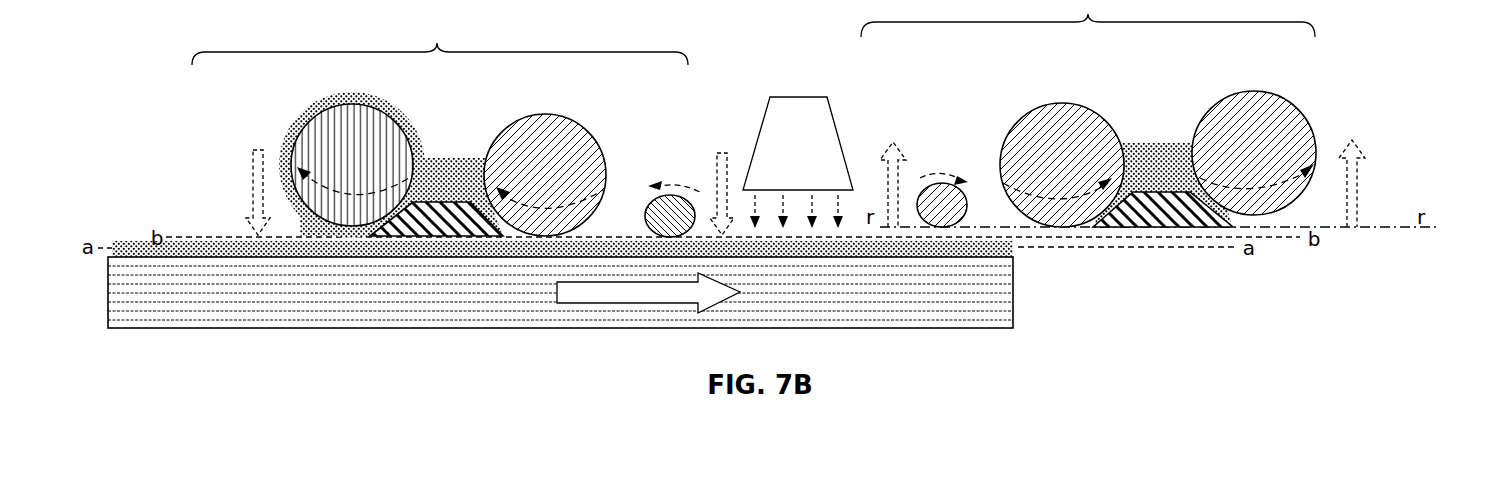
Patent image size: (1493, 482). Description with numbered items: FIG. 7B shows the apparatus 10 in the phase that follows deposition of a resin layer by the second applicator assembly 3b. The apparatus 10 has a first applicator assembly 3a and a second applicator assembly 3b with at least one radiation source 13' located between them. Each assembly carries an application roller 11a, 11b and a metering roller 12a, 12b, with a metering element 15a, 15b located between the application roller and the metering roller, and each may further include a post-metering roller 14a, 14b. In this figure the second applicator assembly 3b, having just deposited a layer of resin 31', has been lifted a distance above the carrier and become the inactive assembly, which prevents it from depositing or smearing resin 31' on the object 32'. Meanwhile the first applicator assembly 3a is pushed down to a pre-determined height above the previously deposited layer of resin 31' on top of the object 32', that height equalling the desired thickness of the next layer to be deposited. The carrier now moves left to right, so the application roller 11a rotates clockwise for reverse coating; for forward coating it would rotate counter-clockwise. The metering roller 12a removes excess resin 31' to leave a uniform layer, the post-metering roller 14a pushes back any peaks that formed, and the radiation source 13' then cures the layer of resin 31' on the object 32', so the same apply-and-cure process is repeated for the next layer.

The apparatus 10 is at (168, 24).
The first applicator assembly 3a is at (440, 41).
The second applicator assembly 3b is at (1088, 18).
The application roller 11a is at (352, 165).
The metering roller 12a is at (545, 175).
The metering element 15a is at (437, 205).
The resin 31' is at (755, 148).
The post-metering roller 14a is at (672, 198).
The radiation source 13' is at (798, 162).
The post-metering roller 14b is at (940, 190).
The metering roller 12b is at (1062, 165).
The application roller 11b is at (1254, 153).
The metering element 15b is at (1146, 200).
The object 32' is at (589, 260).